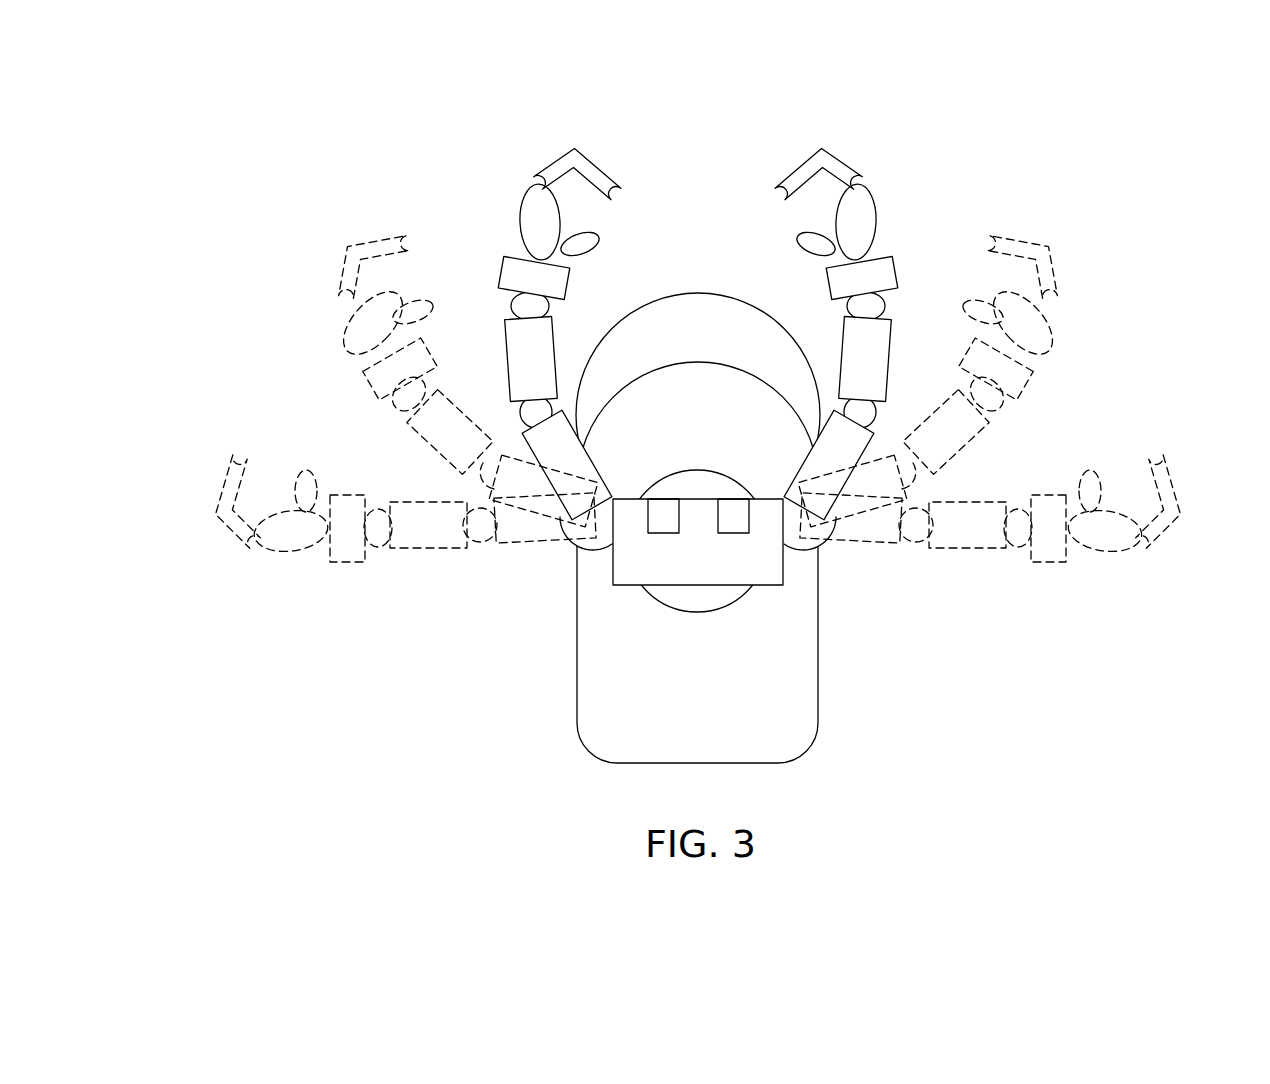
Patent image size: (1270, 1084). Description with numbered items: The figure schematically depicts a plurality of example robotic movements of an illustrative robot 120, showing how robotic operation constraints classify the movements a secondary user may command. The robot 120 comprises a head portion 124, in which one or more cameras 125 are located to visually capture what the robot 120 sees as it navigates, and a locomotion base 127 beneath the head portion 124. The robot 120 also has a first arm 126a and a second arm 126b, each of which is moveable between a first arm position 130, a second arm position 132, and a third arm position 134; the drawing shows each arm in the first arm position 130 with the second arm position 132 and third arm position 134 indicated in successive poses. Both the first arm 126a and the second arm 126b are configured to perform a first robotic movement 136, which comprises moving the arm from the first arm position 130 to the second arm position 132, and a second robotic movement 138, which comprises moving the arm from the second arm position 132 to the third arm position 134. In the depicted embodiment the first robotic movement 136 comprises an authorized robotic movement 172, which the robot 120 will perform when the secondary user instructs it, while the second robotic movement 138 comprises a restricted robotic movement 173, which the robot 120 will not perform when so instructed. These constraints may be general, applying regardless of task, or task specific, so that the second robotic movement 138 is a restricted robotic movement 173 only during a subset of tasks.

The robot 120 is at (813, 328).
The head portion 124 is at (632, 585).
The cameras 125 is at (668, 533).
The first arm 126a is at (510, 250).
The second arm 126b is at (886, 250).
The locomotion base 127 is at (818, 700).
The first arm position 130 is at (703, 287).
The second arm position 132 is at (701, 353).
The third arm position 134 is at (700, 469).
The first robotic movement 136 is at (512, 365).
The second robotic movement 138 is at (433, 452).
The authorized robotic movement 172 is at (703, 320).
The restricted robotic movement 173 is at (702, 432).